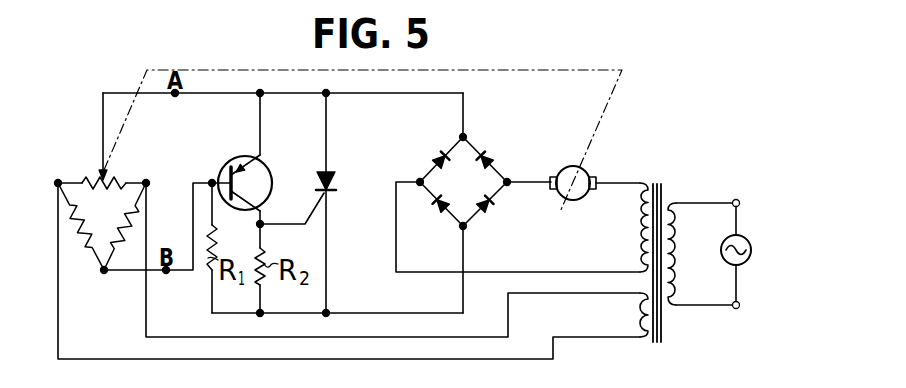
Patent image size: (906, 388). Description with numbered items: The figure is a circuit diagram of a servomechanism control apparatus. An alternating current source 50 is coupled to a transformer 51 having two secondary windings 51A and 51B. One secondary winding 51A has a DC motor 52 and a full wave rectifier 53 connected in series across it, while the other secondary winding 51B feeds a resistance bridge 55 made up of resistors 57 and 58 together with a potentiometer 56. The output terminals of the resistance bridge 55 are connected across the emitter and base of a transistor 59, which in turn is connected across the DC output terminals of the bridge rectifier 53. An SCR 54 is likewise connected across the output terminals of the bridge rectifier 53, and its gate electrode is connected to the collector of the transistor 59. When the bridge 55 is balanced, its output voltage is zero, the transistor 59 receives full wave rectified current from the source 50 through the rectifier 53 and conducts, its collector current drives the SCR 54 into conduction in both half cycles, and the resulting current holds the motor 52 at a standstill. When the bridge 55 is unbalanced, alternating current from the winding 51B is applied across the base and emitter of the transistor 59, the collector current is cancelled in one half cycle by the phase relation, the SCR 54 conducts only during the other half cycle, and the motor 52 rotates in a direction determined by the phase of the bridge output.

The alternating current source 50 is at (742, 218).
The transformer 51 is at (667, 181).
The secondary winding 51A is at (641, 219).
The secondary winding 51B is at (638, 311).
The DC motor 52 is at (575, 202).
The full wave rectifier 53 is at (478, 196).
The SCR 54 is at (329, 176).
The resistance bridge 55 is at (115, 231).
The potentiometer 56 is at (116, 178).
The resistor 57 is at (81, 229).
The resistor 58 is at (125, 229).
The transistor 59 is at (266, 172).